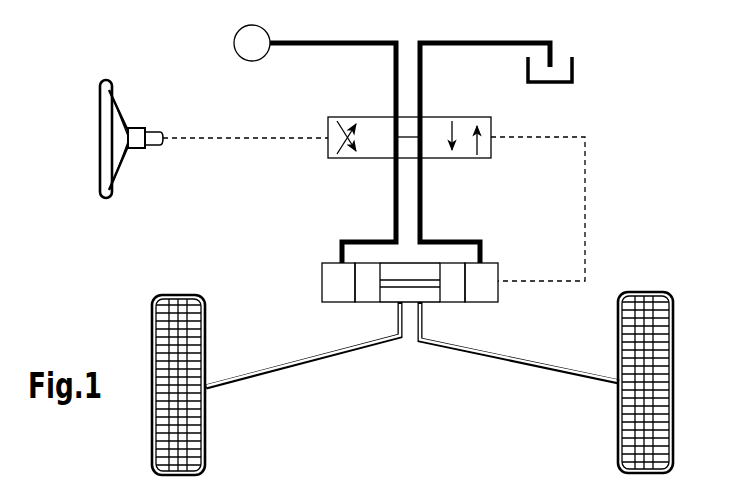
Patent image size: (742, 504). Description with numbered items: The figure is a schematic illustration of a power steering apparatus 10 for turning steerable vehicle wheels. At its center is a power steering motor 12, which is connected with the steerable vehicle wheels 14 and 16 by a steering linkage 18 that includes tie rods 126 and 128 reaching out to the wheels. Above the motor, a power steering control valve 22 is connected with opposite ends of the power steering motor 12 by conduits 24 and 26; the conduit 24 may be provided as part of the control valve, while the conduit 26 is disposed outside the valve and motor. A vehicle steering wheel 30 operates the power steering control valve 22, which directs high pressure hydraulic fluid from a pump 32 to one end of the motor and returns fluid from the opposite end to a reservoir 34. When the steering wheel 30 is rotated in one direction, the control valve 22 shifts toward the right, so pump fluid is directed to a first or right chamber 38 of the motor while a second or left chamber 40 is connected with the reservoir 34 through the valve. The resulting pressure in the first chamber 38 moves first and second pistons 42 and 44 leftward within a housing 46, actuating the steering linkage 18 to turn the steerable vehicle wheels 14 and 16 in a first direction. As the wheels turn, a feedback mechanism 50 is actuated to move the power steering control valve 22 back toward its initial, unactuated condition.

The power steering apparatus 10 is at (660, 124).
The power steering motor 12 is at (385, 283).
The steerable vehicle wheel 14 is at (618, 452).
The steerable vehicle wheel 16 is at (205, 424).
The steering linkage 18 is at (412, 368).
The power steering control valve 22 is at (312, 117).
The conduit 24 is at (422, 187).
The conduit 26 is at (396, 194).
The vehicle steering wheel 30 is at (108, 93).
The pump 32 is at (239, 31).
The reservoir 34 is at (618, 62).
The first chamber 38 is at (486, 281).
The second chamber 40 is at (337, 292).
The first piston 42 is at (448, 292).
The second piston 44 is at (370, 290).
The housing 46 is at (322, 278).
The feedback mechanism 50 is at (585, 237).
The tie rod 126 is at (542, 368).
The tie rod 128 is at (245, 378).